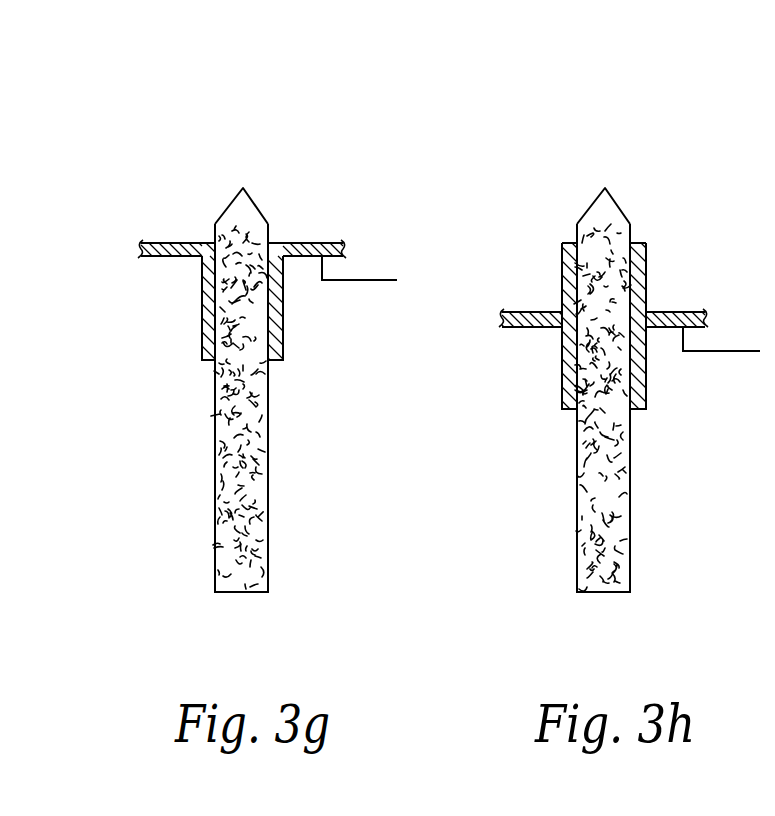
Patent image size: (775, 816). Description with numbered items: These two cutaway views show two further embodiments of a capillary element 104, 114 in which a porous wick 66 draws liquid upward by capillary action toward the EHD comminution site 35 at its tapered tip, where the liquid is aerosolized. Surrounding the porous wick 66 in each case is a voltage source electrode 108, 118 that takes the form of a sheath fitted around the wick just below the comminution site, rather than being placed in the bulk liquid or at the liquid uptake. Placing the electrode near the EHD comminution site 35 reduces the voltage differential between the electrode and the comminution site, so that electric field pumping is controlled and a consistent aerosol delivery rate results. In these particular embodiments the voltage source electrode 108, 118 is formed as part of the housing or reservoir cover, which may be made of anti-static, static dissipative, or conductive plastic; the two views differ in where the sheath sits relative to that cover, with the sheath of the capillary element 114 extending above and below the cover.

In FIG. 3G, the EHD comminution site 35 is at (243, 187).
In FIG. 3H, the EHD comminution site 35 is at (605, 187).
In FIG. 3G, the porous wick 66 is at (225, 217).
In FIG. 3H, the porous wick 66 is at (587, 213).
In FIG. 3G, the capillary element 104 is at (267, 216).
In FIG. 3G, the voltage source electrode 108 is at (272, 240).
In FIG. 3H, the capillary element 114 is at (629, 232).
In FIG. 3H, the voltage source electrode 118 is at (633, 242).